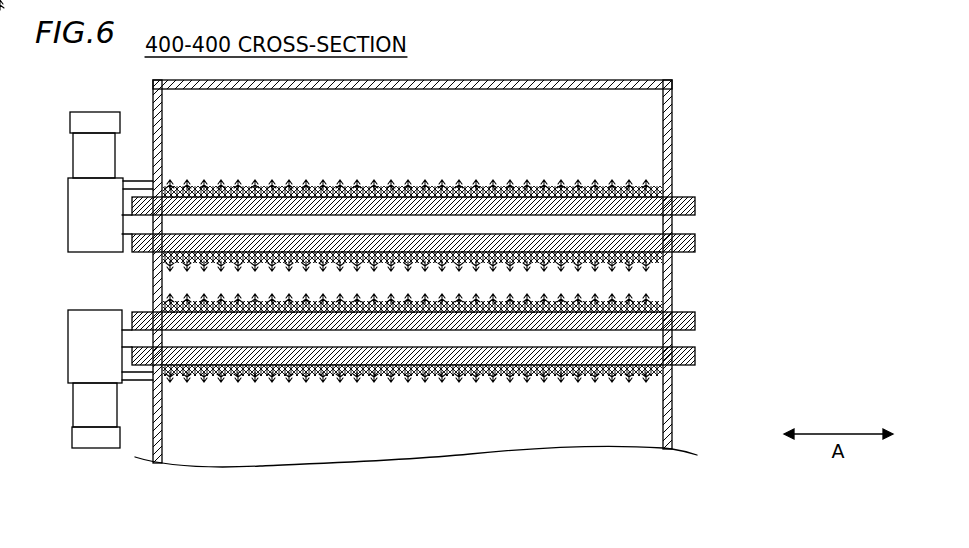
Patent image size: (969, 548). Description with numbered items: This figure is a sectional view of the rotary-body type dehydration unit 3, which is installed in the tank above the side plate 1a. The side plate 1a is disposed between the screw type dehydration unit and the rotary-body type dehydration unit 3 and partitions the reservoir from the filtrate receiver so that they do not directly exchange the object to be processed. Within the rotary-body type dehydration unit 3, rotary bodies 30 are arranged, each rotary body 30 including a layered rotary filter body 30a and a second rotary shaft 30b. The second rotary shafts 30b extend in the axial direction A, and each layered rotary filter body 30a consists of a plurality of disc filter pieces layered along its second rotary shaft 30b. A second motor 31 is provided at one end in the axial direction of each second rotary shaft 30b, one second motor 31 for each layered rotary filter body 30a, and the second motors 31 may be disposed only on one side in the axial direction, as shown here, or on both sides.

The rotary-body type dehydration unit 3 is at (645, 72).
The rotary body 30 is at (430, 168).
The layered rotary filter body 30a is at (502, 187).
The second rotary shaft 30b is at (697, 224).
The second motor 31 is at (95, 111).
The side plate 1a is at (263, 463).